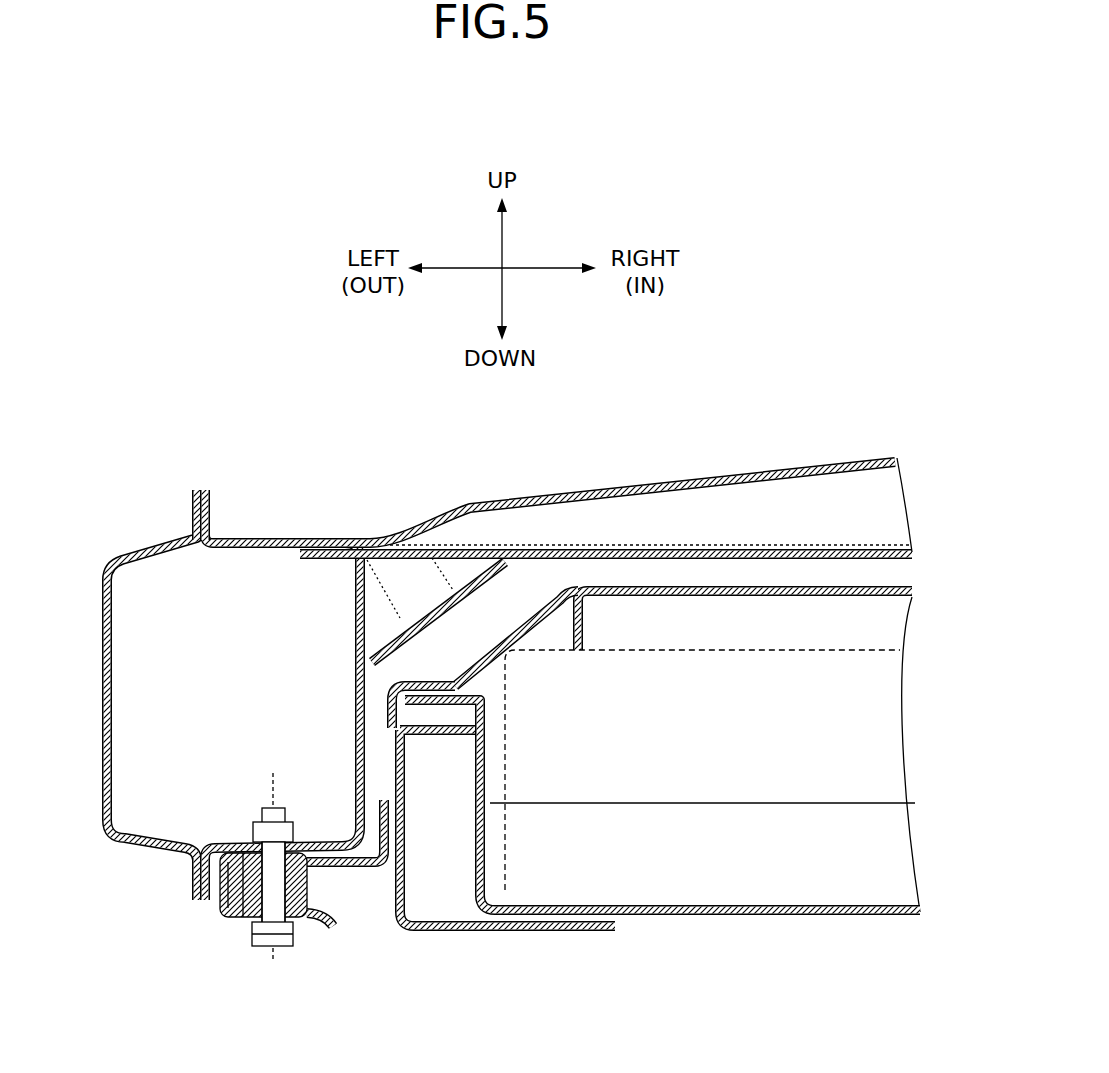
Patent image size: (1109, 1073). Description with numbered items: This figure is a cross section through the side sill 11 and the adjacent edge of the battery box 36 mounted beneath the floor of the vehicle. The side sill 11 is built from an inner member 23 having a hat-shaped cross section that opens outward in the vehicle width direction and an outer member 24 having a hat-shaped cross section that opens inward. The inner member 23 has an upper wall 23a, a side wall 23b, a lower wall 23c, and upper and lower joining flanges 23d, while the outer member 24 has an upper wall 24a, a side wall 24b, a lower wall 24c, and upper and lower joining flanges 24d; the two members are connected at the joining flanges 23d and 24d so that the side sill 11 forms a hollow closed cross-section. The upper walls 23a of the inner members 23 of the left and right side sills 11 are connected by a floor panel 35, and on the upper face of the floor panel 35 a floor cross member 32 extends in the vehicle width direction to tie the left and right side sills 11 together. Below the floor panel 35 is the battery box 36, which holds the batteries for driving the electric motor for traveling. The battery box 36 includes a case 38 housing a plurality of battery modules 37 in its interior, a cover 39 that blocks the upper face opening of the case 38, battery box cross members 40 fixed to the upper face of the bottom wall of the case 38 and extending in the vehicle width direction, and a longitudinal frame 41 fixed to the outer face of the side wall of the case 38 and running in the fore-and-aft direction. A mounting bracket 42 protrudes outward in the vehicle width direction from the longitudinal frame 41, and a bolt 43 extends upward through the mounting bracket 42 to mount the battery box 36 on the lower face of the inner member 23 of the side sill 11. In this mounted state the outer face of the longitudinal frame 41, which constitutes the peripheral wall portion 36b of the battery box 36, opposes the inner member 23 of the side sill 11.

The side sill 11 is at (130, 552).
The inner member 23 is at (270, 548).
The upper wall 23a is at (250, 550).
The side wall 23b is at (354, 630).
The lower wall 23c is at (330, 842).
The joining flanges 23d is at (210, 492).
The outer member 24 is at (94, 703).
The upper wall 24a is at (150, 557).
The side wall 24b is at (103, 748).
The lower wall 24c is at (150, 840).
The joining flanges 24d is at (194, 492).
The floor cross member 32 is at (696, 472).
The floor panel 35 is at (718, 548).
The battery box 36 is at (821, 930).
The peripheral wall portion 36b is at (392, 775).
The battery module 37 is at (742, 652).
The case 38 is at (695, 917).
The cover 39 is at (850, 588).
The battery box cross member 40 is at (740, 803).
The longitudinal frame 41 is at (392, 757).
The mounting bracket 42 is at (330, 930).
The bolt 43 is at (272, 947).